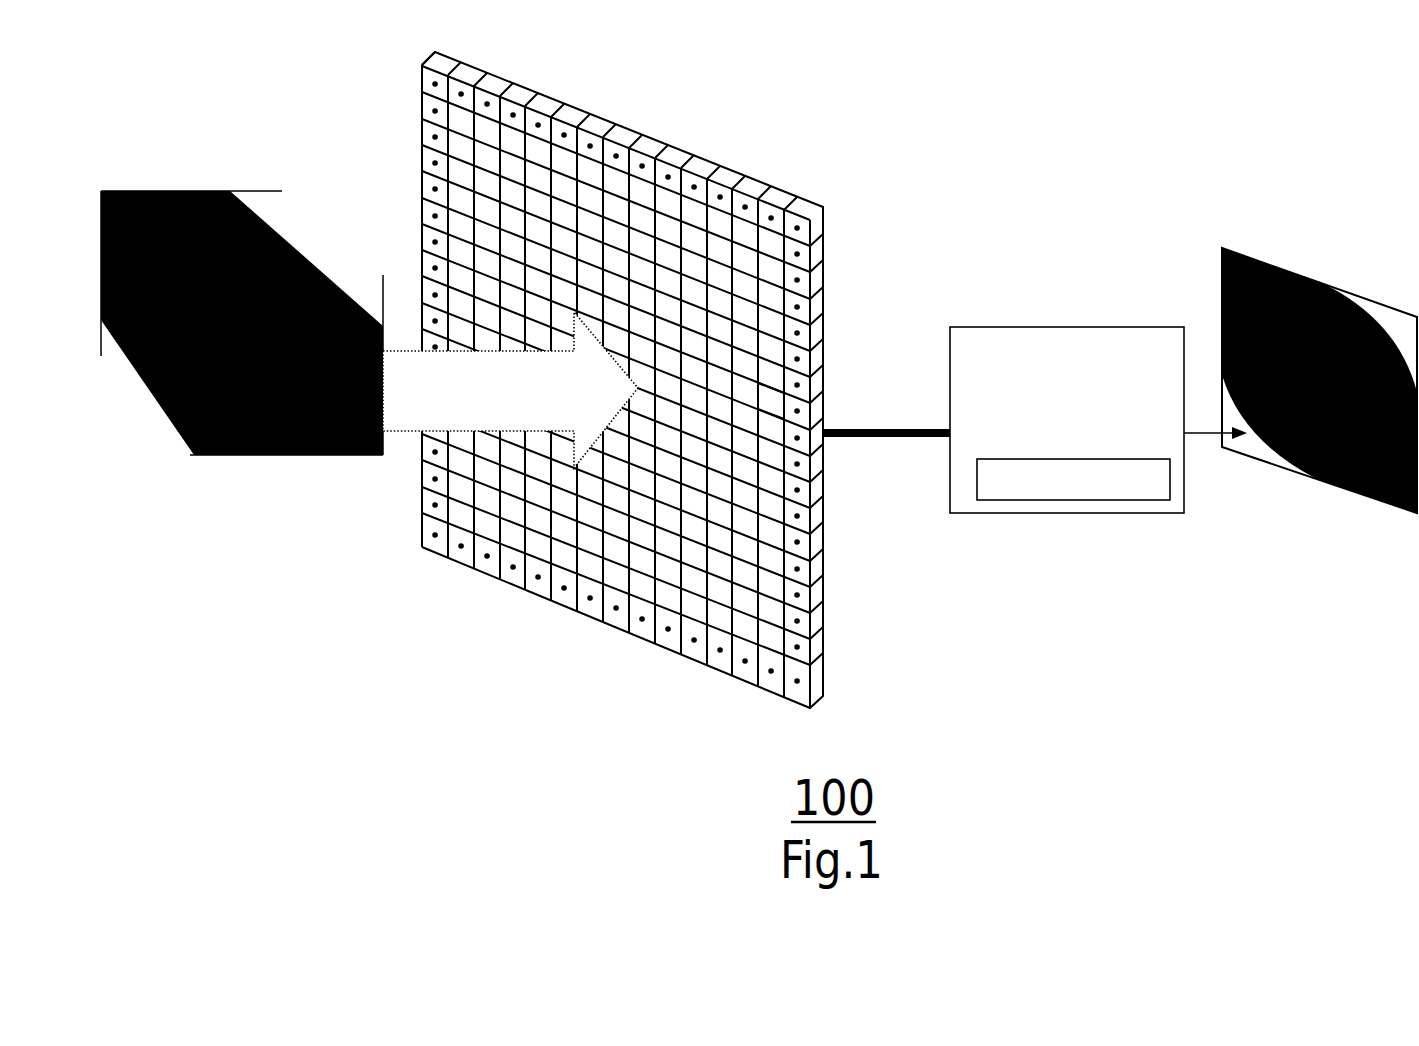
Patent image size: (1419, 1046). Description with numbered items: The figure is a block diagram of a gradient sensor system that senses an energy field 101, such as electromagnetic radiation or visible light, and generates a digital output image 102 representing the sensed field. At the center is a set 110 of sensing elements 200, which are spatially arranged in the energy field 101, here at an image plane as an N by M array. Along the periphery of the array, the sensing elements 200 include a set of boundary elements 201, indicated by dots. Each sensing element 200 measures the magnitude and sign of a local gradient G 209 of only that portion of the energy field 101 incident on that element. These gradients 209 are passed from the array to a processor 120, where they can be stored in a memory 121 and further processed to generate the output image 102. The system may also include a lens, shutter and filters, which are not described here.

The energy field 101 is at (222, 191).
The set of sensing elements 110 is at (629, 128).
The sensing element 200 is at (760, 390).
The boundary element 201 is at (802, 687).
The local gradient G 209 is at (870, 438).
The processor 120 is at (1030, 327).
The memory 121 is at (1117, 500).
The digital output image 102 is at (1313, 276).